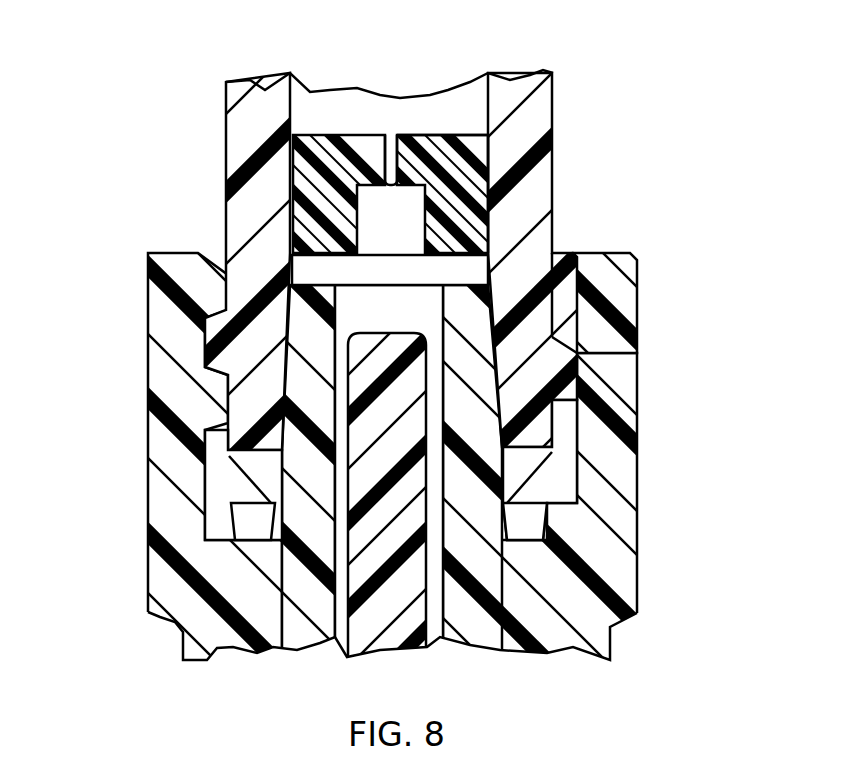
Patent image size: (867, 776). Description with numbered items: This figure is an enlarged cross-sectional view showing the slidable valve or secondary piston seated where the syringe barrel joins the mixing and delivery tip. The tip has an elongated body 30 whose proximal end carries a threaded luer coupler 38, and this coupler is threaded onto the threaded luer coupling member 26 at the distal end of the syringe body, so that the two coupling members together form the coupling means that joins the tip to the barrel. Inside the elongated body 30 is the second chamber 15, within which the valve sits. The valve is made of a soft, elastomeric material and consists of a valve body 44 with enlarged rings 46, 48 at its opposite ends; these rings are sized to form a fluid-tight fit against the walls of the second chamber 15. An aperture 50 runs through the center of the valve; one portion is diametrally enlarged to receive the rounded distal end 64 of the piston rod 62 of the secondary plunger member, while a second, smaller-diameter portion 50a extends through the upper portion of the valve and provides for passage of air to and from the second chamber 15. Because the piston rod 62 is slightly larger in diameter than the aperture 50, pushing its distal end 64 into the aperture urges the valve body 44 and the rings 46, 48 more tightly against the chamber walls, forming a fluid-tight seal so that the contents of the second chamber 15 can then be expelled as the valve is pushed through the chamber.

The second chamber 15 is at (448, 103).
The threaded luer coupling member 26 is at (640, 403).
The elongated body 30 is at (226, 133).
The threaded luer coupler 38 is at (637, 352).
The valve body 44 is at (480, 173).
The ring 46 is at (488, 158).
The ring 48 is at (488, 240).
The aperture 50 is at (368, 218).
The second portion of the aperture 50a is at (392, 173).
The piston rod 62 is at (357, 475).
The distal end 64 is at (357, 340).